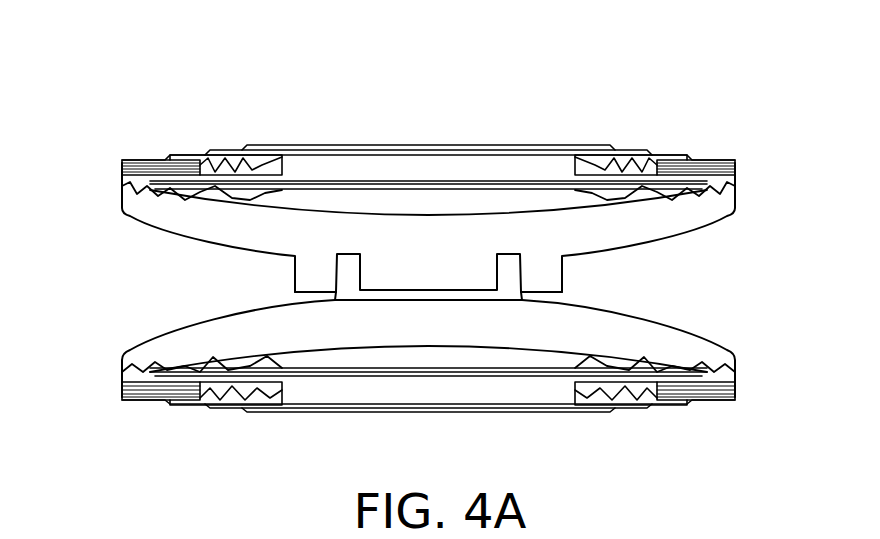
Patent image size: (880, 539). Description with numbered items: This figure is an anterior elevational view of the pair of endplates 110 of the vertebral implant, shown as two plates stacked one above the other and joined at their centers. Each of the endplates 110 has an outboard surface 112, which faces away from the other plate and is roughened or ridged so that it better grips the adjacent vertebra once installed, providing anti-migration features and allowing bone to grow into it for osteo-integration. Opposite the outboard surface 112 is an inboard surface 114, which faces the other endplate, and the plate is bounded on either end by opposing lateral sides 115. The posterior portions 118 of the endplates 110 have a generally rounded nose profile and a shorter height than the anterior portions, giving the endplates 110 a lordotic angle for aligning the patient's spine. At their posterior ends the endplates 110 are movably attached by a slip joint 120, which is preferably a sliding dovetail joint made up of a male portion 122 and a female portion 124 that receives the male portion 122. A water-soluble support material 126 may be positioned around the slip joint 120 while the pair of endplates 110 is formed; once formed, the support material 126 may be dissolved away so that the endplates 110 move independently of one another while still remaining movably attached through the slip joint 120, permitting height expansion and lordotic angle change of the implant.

The endplates 110 is at (653, 145).
The outboard surface 112 is at (622, 148).
The inboard surface 114 is at (210, 318).
The opposing lateral sides 115 is at (123, 190).
The posterior portion 118 is at (602, 229).
The slip joint 120 is at (330, 300).
The male portion 122 is at (348, 282).
The female portion 124 is at (334, 258).
The water-soluble support material 126 is at (344, 258).